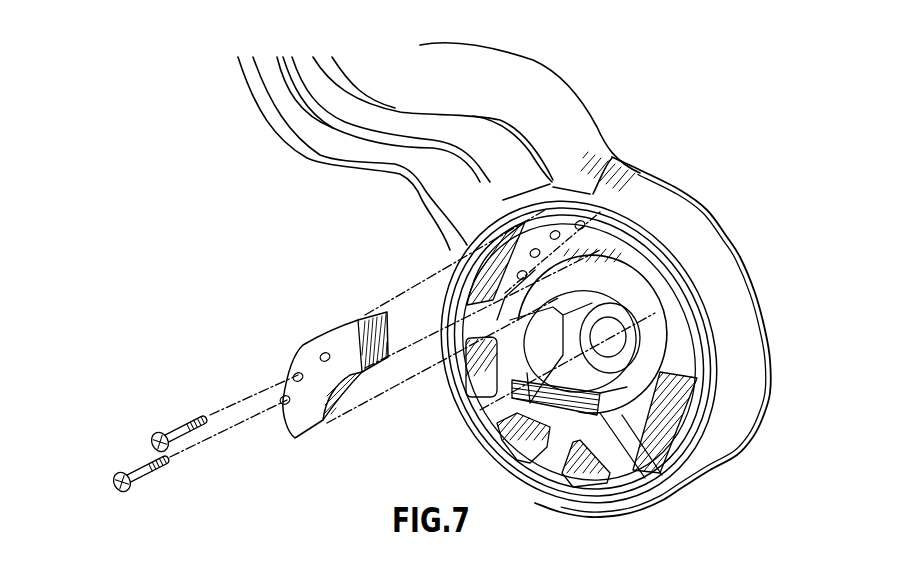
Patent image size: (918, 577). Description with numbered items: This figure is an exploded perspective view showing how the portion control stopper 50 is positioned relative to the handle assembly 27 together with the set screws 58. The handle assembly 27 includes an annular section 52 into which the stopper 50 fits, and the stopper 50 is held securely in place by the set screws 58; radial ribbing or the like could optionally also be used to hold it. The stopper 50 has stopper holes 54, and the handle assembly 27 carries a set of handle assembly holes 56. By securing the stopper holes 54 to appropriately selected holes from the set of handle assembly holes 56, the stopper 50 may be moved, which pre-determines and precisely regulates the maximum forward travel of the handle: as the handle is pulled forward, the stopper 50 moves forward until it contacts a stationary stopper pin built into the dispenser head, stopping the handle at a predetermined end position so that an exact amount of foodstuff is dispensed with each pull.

The handle assembly 27 is at (672, 209).
The portion control stopper 50 is at (308, 347).
The annular section 52 is at (688, 422).
The stopper holes 54 is at (296, 376).
The handle assembly holes 56 is at (603, 228).
The set screws 58 is at (147, 462).